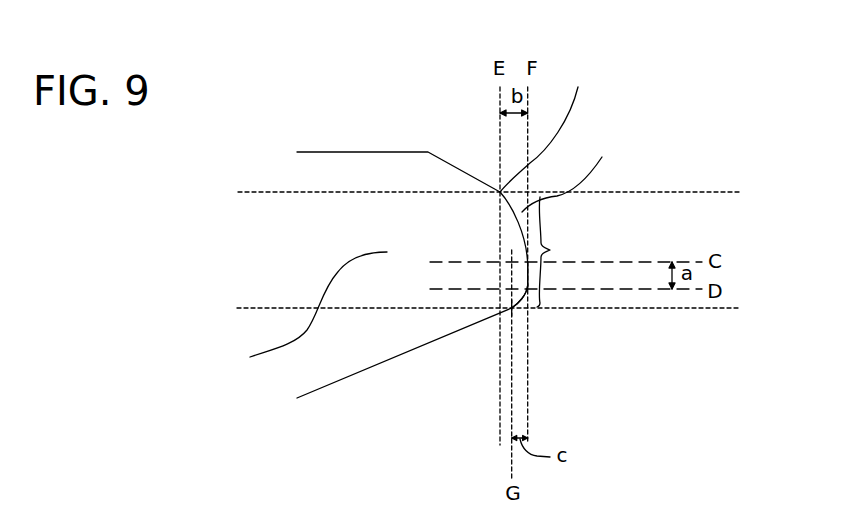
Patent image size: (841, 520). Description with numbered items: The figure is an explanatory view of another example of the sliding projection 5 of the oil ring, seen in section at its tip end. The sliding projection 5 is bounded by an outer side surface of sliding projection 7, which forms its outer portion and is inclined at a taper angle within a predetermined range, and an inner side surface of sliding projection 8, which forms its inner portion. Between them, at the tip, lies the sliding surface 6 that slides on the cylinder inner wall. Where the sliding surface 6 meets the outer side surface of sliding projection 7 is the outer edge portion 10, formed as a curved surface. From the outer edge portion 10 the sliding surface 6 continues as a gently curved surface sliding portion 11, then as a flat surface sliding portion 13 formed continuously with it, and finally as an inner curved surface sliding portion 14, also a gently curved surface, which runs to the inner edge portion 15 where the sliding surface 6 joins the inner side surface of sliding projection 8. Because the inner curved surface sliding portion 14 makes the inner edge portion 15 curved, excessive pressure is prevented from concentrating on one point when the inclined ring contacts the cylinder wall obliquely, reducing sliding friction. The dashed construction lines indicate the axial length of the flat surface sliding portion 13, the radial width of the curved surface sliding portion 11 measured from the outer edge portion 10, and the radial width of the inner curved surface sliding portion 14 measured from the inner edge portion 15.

The sliding projection 5 is at (305, 315).
The sliding surface 6 is at (536, 250).
The outer side surface of sliding projection 7 is at (453, 163).
The inner side surface of sliding projection 8 is at (407, 353).
The outer edge portion 10 is at (544, 126).
The curved surface sliding portion 11 is at (576, 169).
The flat surface sliding portion 13 is at (528, 273).
The inner curved surface sliding portion 14 is at (523, 295).
The inner edge portion 15 is at (512, 308).